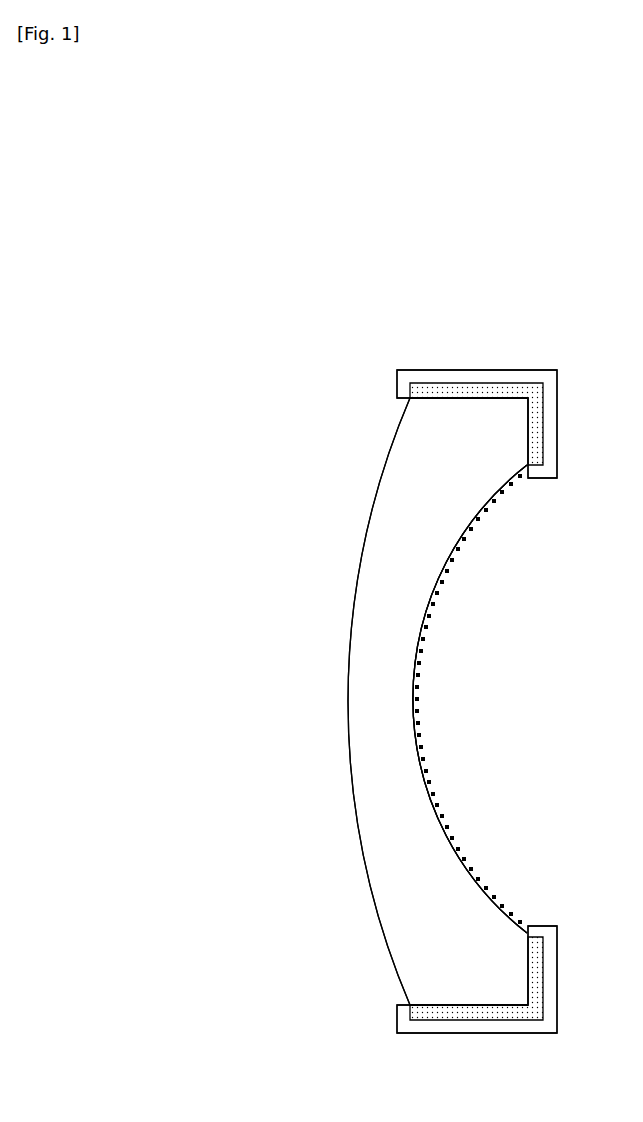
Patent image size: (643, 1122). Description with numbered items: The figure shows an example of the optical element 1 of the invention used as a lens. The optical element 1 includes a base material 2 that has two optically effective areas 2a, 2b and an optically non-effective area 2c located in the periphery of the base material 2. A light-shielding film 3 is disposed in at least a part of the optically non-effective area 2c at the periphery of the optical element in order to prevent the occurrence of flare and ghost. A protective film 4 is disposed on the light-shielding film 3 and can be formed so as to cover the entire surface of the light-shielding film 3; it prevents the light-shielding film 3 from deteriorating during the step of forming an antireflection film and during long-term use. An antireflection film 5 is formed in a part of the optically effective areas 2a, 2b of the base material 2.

The optical element 1 is at (377, 350).
The base material 2 is at (370, 690).
The optically effective area 2a is at (362, 548).
The optically effective area 2b is at (470, 533).
The optically non-effective area 2c is at (477, 1005).
The light-shielding film 3 is at (537, 948).
The protective film 4 is at (557, 979).
The antireflection film 5 is at (467, 862).